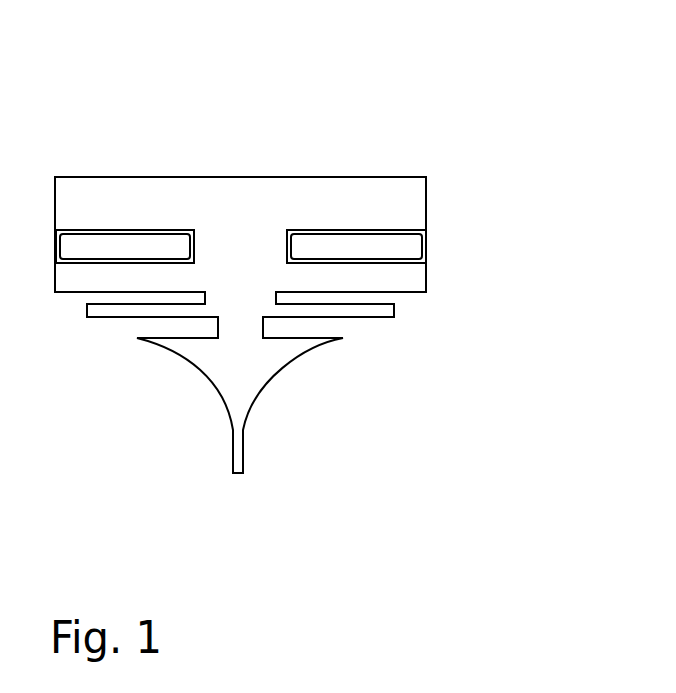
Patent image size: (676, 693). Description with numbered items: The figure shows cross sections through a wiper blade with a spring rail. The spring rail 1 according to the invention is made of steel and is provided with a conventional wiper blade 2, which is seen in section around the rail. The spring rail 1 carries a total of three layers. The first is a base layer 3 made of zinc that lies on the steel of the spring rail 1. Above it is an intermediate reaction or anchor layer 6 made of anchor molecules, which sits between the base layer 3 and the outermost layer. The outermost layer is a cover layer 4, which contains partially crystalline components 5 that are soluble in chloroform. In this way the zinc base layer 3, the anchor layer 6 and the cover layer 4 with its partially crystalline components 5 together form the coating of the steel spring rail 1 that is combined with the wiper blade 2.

The spring rail 1 is at (108, 245).
The wiper blade 2 is at (78, 205).
The base layer 3 is at (427, 247).
The cover layer 4 is at (427, 228).
The partially crystalline components 5 is at (427, 228).
The intermediate reaction or anchor layer 6 is at (427, 228).